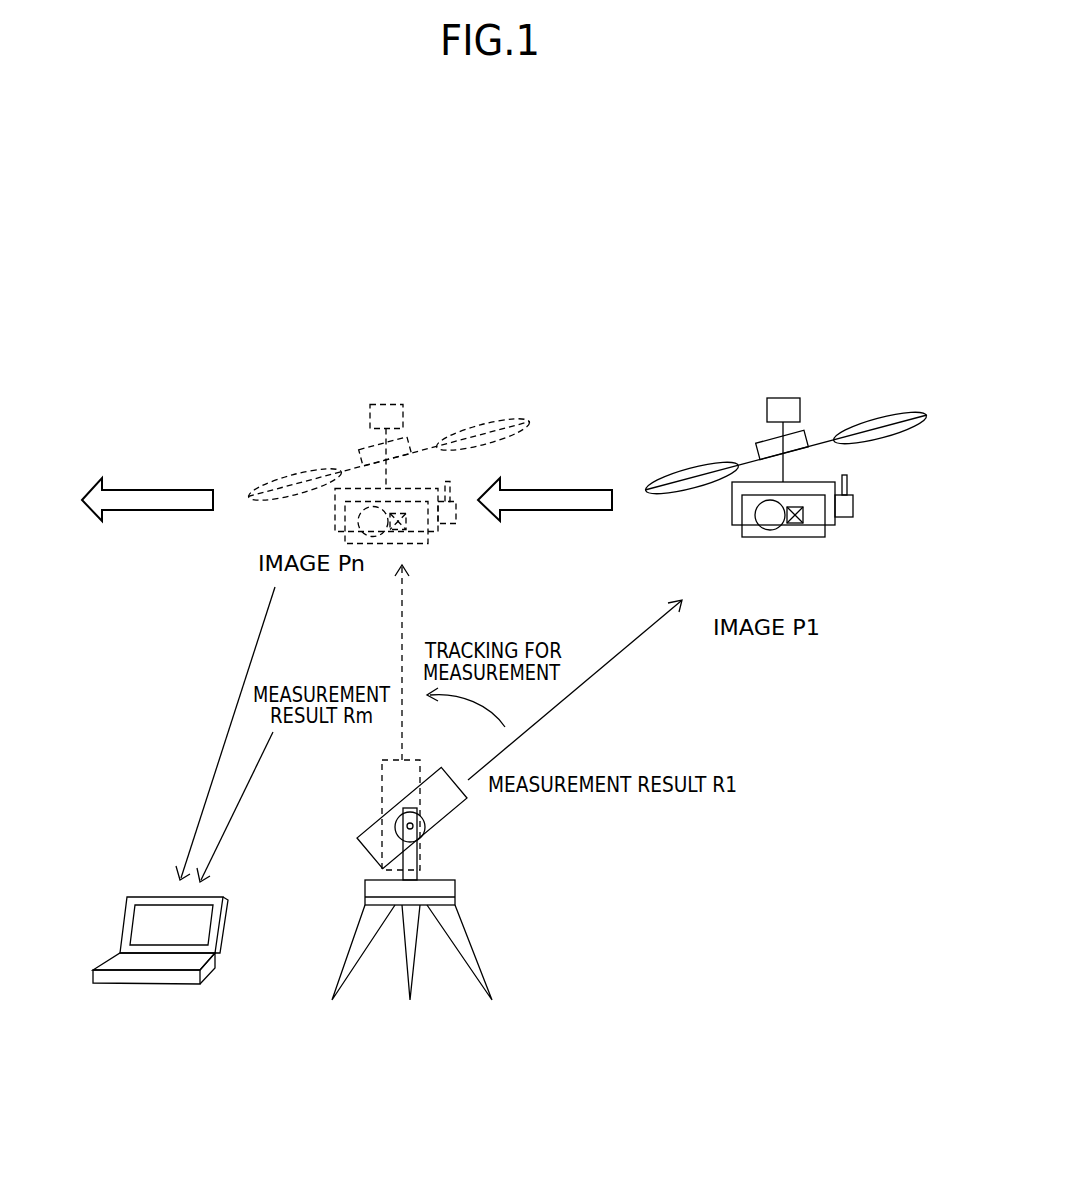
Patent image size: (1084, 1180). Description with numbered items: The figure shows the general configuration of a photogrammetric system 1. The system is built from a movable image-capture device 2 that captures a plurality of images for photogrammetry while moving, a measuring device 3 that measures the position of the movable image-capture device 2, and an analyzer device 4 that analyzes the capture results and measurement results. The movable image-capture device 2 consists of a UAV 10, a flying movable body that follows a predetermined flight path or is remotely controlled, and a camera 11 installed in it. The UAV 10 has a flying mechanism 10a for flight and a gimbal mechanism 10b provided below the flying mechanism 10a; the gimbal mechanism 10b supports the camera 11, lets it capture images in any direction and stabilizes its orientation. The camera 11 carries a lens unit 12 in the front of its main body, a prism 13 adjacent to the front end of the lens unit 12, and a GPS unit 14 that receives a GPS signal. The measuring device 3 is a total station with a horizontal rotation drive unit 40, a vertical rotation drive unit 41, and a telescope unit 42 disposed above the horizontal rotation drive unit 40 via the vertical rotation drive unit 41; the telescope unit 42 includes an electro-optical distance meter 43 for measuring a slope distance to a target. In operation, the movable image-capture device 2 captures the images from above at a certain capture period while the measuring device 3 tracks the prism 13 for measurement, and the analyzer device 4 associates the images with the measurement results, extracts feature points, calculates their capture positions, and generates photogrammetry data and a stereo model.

The photogrammetric system 1 is at (622, 250).
The movable image-capture device 2 is at (780, 373).
The UAV 10 is at (813, 426).
The flying mechanism 10a is at (757, 437).
The gimbal mechanism 10b is at (730, 497).
The camera 11 is at (826, 536).
The lens unit 12 is at (753, 537).
The prism 13 is at (796, 532).
The global positioning system (GPS) unit 14 is at (857, 503).
The measuring device 3 is at (344, 816).
The analyzer device 4 is at (147, 866).
The horizontal rotation drive unit 40 is at (453, 878).
The vertical rotation drive unit 41 is at (368, 849).
The telescope unit 42 is at (445, 817).
The electro-optical distance meter (EDM) 43 is at (464, 817).